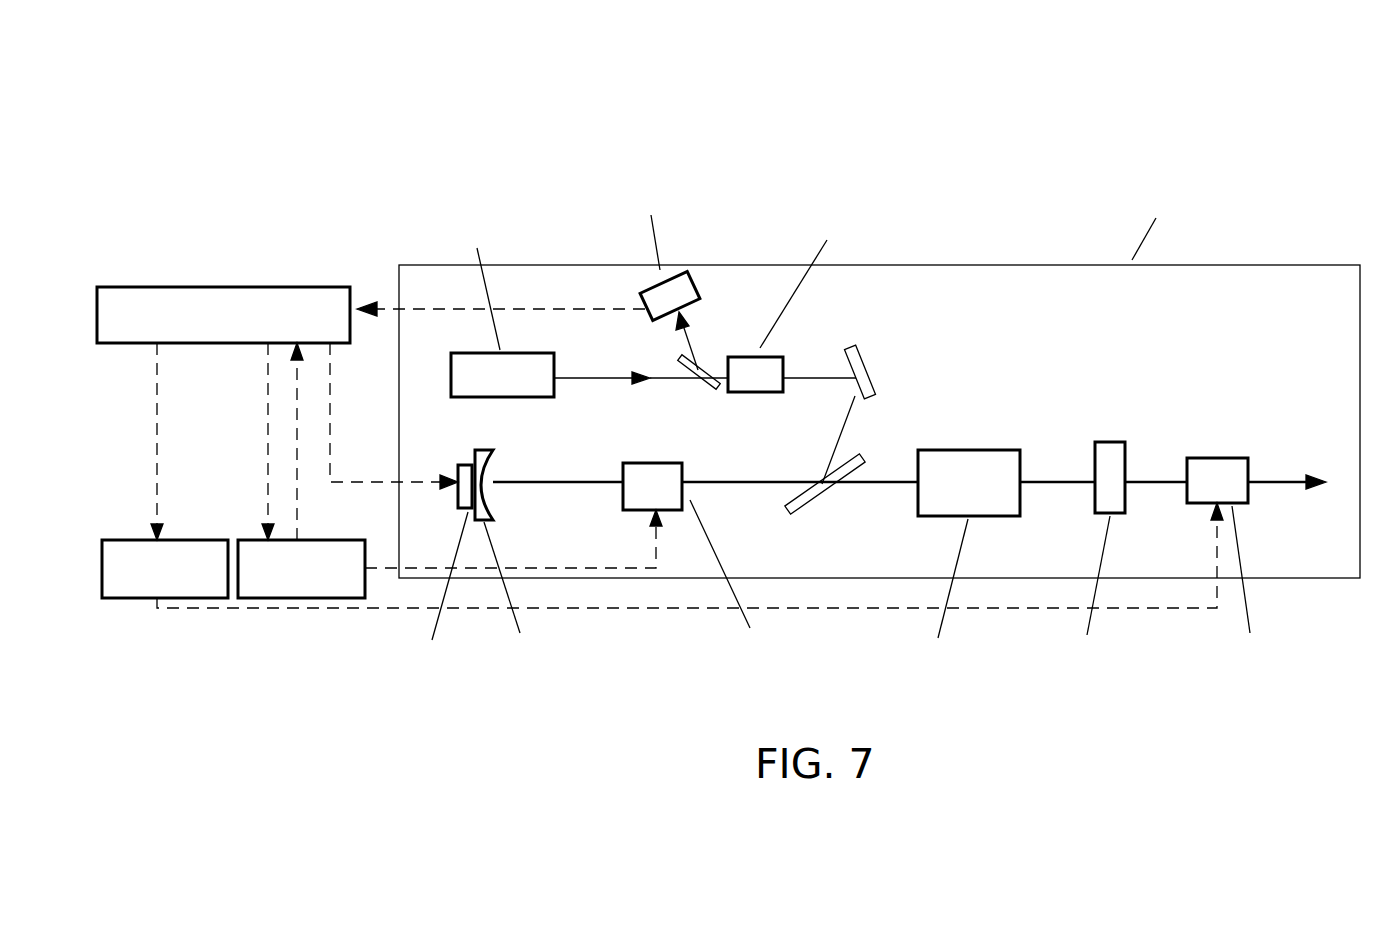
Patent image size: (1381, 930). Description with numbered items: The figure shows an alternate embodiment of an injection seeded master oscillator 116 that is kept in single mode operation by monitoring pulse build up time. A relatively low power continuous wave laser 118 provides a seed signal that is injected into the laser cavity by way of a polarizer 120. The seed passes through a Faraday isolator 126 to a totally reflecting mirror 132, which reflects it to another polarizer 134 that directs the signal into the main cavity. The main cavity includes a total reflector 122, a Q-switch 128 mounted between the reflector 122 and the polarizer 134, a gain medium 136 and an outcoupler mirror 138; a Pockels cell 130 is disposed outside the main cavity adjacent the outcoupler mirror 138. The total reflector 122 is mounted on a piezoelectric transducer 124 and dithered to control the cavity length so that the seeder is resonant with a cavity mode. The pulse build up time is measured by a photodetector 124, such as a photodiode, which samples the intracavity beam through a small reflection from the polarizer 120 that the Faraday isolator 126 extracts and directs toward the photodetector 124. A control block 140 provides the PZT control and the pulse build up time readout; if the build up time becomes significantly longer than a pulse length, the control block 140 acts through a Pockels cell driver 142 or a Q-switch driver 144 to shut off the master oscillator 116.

The master oscillator 116 is at (1312, 156).
The continuous wave (CW) laser 118 is at (535, 354).
The polarizer 120 is at (709, 371).
The total reflector 122 is at (491, 472).
The piezoelectric transducer / photodetector 124 is at (700, 298).
The Faraday isolator 126 is at (772, 357).
The Q-switch 128 is at (684, 479).
The Pockels cell 130 is at (1216, 457).
The totally reflecting mirror 132 is at (868, 378).
The polarizer 134 is at (855, 460).
The gain medium 136 is at (976, 449).
The outcoupler mirror 138 is at (1111, 441).
The control block 140 is at (205, 287).
The Pockels cell driver 142 is at (114, 540).
The Q-switch driver 144 is at (350, 540).